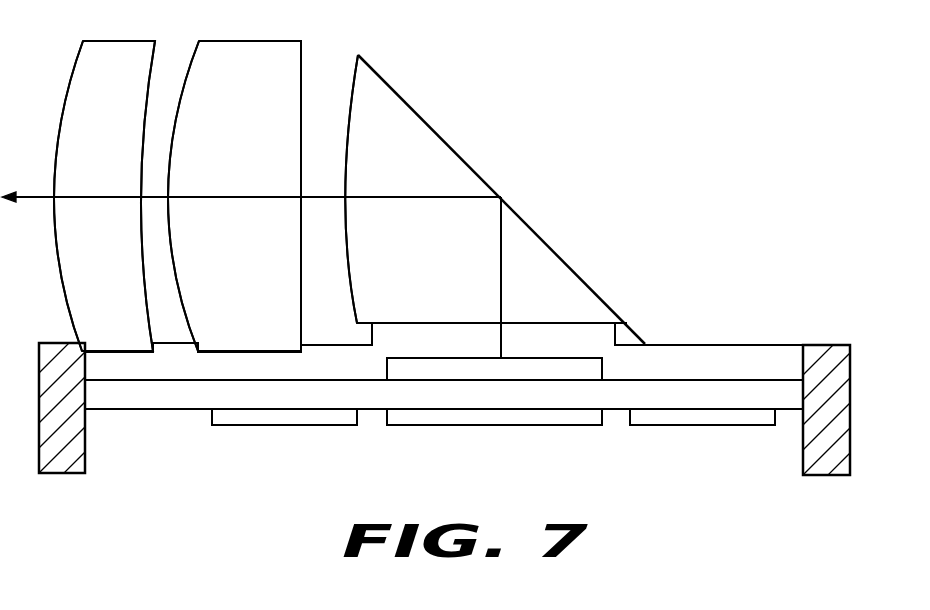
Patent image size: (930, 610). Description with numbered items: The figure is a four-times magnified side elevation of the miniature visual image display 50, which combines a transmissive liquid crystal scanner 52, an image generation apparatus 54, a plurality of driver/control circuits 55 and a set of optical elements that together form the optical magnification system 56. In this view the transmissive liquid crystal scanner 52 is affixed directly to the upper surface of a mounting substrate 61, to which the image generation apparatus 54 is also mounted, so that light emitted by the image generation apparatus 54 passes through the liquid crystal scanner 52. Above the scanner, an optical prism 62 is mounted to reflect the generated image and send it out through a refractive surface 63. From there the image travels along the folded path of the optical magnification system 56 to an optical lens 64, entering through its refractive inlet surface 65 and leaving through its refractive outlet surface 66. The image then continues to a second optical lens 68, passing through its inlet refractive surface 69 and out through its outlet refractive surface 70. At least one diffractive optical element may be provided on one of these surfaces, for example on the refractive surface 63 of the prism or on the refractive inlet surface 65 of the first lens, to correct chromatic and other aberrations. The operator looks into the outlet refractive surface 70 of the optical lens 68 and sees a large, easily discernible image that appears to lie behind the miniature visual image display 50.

The miniature visual image display 50 is at (260, 553).
The transmissive liquid crystal scanner 52 is at (602, 368).
The image generation apparatus 54 is at (488, 427).
The driver/control circuits 55 is at (280, 427).
The optical magnification system 56 is at (521, 121).
The mounting substrate 61 is at (145, 408).
The optical prism 62 is at (378, 247).
The refractive surface 63 is at (353, 77).
The optical lens 64 is at (218, 247).
The refractive inlet surface 65 is at (301, 302).
The refractive outlet surface 66 is at (196, 48).
The optical lens 68 is at (83, 247).
The inlet refractive surface 69 is at (141, 151).
The outlet refractive surface 70 is at (77, 69).